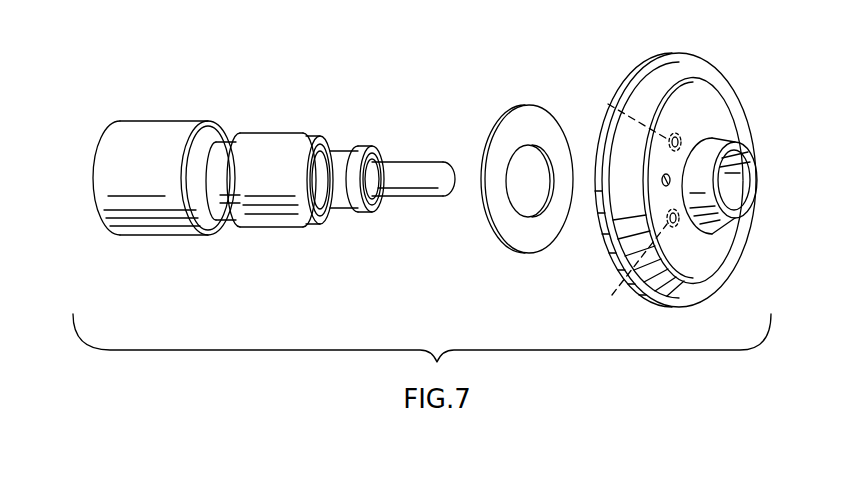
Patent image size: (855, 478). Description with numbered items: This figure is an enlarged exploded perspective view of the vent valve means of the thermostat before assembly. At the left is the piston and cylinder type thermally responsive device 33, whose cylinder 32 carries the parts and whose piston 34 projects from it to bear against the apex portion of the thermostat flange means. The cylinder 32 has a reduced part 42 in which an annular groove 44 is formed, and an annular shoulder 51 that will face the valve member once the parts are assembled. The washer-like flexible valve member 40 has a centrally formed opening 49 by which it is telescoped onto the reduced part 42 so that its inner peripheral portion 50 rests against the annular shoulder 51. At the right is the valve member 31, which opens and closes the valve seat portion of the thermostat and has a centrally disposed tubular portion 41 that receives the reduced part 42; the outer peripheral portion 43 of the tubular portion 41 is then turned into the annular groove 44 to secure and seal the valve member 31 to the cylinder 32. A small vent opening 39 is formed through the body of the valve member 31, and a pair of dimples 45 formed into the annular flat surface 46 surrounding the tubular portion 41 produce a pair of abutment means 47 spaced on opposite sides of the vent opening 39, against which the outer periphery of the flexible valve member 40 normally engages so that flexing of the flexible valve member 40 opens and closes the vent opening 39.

The valve member 31 is at (730, 118).
The cylinder 32 is at (286, 132).
The thermally responsive device 33 is at (103, 113).
The piston 34 is at (404, 160).
The vent opening 39 is at (663, 184).
The flexible valve member 40 is at (508, 162).
The tubular portion 41 is at (718, 140).
The reduced part 42 is at (341, 147).
The outer peripheral portion 43 is at (737, 230).
The annular groove 44 is at (357, 212).
The dimples 45 is at (680, 140).
The annular flat surface 46 is at (687, 102).
The abutment means 47 is at (608, 104).
The opening 49 is at (543, 198).
The inner peripheral portion 50 is at (503, 187).
The annular shoulder 51 is at (313, 137).